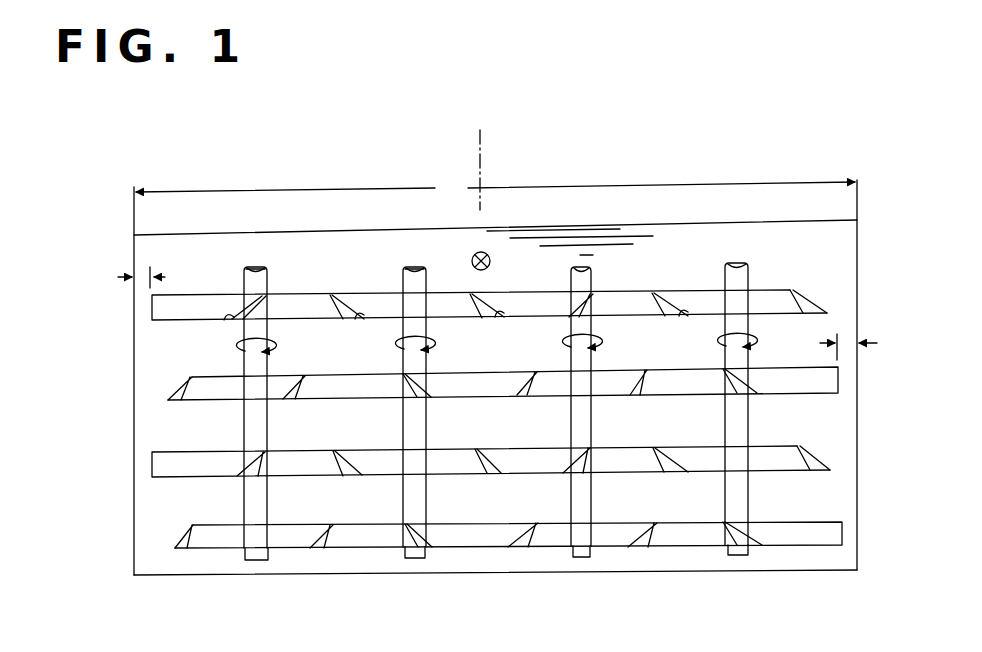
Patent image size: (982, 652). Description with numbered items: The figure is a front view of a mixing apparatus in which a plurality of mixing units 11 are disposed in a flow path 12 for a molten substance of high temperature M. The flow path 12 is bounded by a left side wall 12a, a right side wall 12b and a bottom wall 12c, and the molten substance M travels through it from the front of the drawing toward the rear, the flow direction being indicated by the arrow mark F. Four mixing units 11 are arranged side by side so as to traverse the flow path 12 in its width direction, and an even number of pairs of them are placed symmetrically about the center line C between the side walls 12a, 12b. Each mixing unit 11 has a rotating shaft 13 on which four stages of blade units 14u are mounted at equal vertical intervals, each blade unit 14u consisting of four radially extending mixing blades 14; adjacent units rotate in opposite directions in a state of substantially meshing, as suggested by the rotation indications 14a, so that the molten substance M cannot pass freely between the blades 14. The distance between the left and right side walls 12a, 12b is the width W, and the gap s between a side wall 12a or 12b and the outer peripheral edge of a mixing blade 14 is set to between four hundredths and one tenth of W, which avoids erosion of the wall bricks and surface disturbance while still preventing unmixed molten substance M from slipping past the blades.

The mixing unit 11 is at (233, 277).
The flow path 12 is at (495, 402).
The left side wall 12a is at (137, 452).
The right side wall 12b is at (855, 417).
The bottom wall 12c is at (475, 573).
The rotating shaft 13 is at (267, 273).
The mixing blade 14 is at (185, 294).
The bar end / rotation 14a is at (236, 345).
The blade unit 14u is at (297, 324).
The distance between the left and right side walls W is at (495, 192).
The center line C is at (492, 168).
The molten substance of high temperature M is at (613, 228).
The flow of the molten substance F is at (491, 264).
The gap s is at (497, 301).